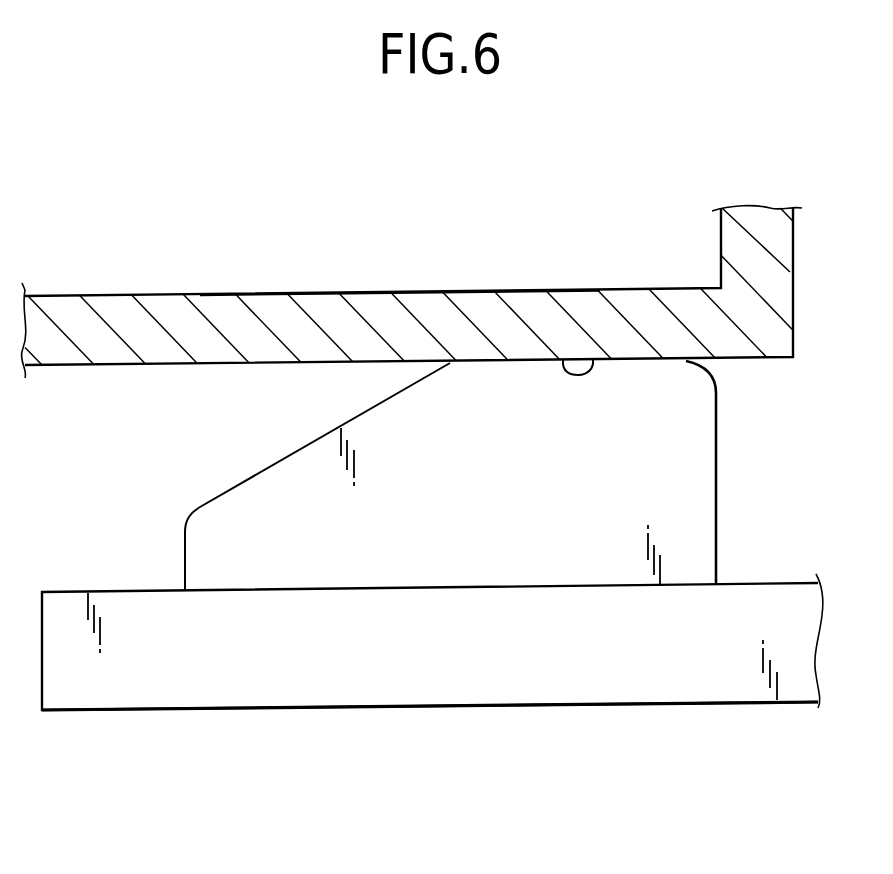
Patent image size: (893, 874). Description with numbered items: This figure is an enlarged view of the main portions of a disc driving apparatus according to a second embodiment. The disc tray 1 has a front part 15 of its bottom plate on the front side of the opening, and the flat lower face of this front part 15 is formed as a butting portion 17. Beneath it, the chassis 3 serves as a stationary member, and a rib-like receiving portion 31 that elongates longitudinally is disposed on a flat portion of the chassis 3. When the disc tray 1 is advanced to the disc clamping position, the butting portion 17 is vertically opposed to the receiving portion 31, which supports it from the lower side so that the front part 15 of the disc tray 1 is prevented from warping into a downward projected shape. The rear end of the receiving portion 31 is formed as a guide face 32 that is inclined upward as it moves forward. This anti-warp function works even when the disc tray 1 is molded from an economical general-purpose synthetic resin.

The disc tray 1 is at (794, 335).
The front part of the disc tray 15 is at (370, 293).
The butting portion 17 is at (563, 360).
The chassis 3 is at (697, 689).
The receiving portion 31 is at (718, 465).
The guide face 32 is at (261, 478).